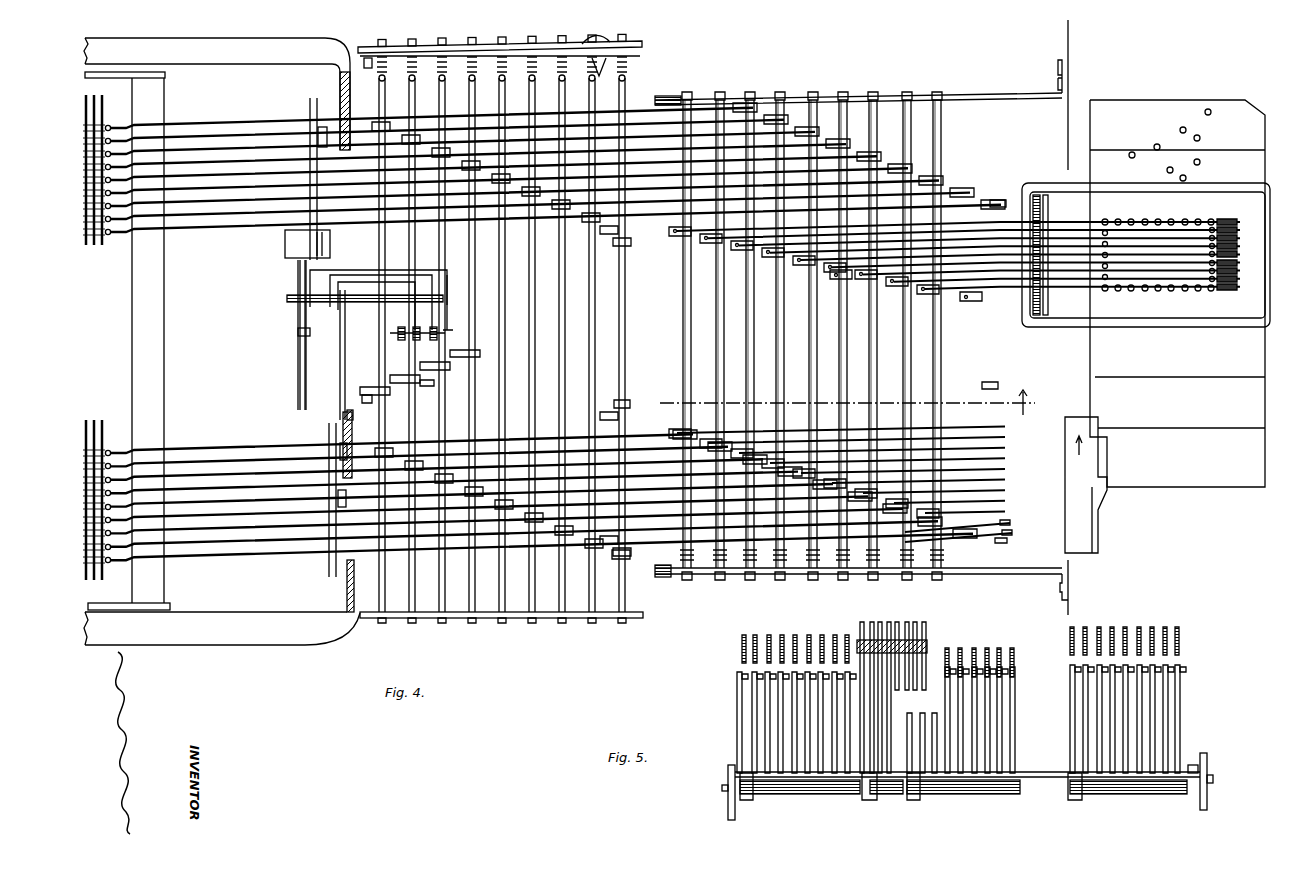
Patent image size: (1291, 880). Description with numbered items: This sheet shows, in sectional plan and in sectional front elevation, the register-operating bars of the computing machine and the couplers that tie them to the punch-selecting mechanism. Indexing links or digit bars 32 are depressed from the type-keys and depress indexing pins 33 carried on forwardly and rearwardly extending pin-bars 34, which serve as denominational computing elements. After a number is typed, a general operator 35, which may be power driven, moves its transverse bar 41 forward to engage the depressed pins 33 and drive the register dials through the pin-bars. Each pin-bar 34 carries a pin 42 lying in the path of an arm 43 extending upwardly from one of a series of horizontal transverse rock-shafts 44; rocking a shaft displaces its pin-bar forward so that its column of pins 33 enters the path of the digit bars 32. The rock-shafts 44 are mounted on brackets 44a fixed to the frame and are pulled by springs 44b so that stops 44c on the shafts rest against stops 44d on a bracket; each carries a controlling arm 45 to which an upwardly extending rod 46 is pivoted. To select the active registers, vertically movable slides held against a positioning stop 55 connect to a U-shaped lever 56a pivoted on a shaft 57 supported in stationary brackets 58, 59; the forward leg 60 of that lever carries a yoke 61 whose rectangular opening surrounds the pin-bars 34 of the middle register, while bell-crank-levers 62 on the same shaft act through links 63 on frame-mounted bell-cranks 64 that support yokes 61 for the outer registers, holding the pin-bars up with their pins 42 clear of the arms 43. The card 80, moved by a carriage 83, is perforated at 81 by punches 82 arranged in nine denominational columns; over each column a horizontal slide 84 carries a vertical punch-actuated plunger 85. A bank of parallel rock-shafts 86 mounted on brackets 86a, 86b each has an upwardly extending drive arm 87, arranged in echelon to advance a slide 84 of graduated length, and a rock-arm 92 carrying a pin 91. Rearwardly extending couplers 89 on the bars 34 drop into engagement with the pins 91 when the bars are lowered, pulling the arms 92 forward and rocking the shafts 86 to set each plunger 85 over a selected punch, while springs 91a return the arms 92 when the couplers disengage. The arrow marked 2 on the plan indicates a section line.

In FIG. 4, the section line indicator 2 is at (847, 404).
In FIG. 4, the indexing links or digit bars 32 is at (96, 240).
In FIG. 4, the indexing pins 33 is at (104, 125).
In FIG. 4, the pin-bars 34 is at (219, 128).
In FIG. 4, the general operator 35 is at (136, 610).
In FIG. 4, the transverse bar 41 is at (136, 337).
In FIG. 4, the pin 42 is at (600, 234).
In FIG. 4, the arm 43 is at (384, 122).
In FIG. 4, the horizontal transverse rock-shafts 44 is at (574, 100).
In FIG. 4, the brackets 44a is at (576, 628).
In FIG. 4, the springs 44b is at (599, 77).
In FIG. 4, the stops 44c is at (596, 38).
In FIG. 4, the stops 44d is at (368, 70).
In FIG. 4, the controlling arm 45 is at (548, 290).
In FIG. 4, the rod 46 is at (430, 380).
In FIG. 4, the positioning stop 55 is at (413, 340).
In FIG. 4, the U-shaped lever 56a is at (395, 270).
In FIG. 4, the shaft 57 is at (290, 293).
In FIG. 4, the stationary bracket 58 is at (285, 240).
In FIG. 4, the stationary bracket 59 is at (447, 270).
In FIG. 4, the forward leg 60 is at (298, 327).
In FIG. 4, the yoke 61 is at (310, 104).
In FIG. 4, the bell-crank-levers 62 is at (375, 280).
In FIG. 4, the links 63 is at (326, 412).
In FIG. 4, the bell-cranks 64 is at (322, 127).
In FIG. 4, the card 80 is at (1177, 292).
In FIG. 4, the perforations 81 is at (1157, 144).
In FIG. 4, the punches 82 is at (1145, 219).
In FIG. 4, the carriage 83 is at (1086, 485).
In FIG. 4, the horizontal slide 84 is at (1082, 272).
In FIG. 5, the horizontal slide 84 is at (917, 625).
In FIG. 4, the punch-actuated plunger 85 is at (1228, 219).
In FIG. 4, the rock-shafts 86 is at (942, 123).
In FIG. 5, the rock-shafts 86 is at (1043, 772).
In FIG. 4, the bracket 86a is at (985, 568).
In FIG. 5, the bracket 86a is at (1207, 802).
In FIG. 4, the bracket 86b is at (868, 96).
In FIG. 5, the bracket 86b is at (728, 798).
In FIG. 4, the drive arm 87 is at (836, 280).
In FIG. 5, the drive arm 87 is at (890, 700).
In FIG. 4, the couplers 89 is at (654, 100).
In FIG. 5, the couplers 89 is at (755, 635).
In FIG. 4, the pin 91 is at (996, 200).
In FIG. 5, the pin 91 is at (750, 678).
In FIG. 4, the springs 91a is at (714, 562).
In FIG. 5, the springs 91a is at (1194, 765).
In FIG. 4, the rock-arms 92 is at (737, 103).
In FIG. 5, the rock-arms 92 is at (765, 727).